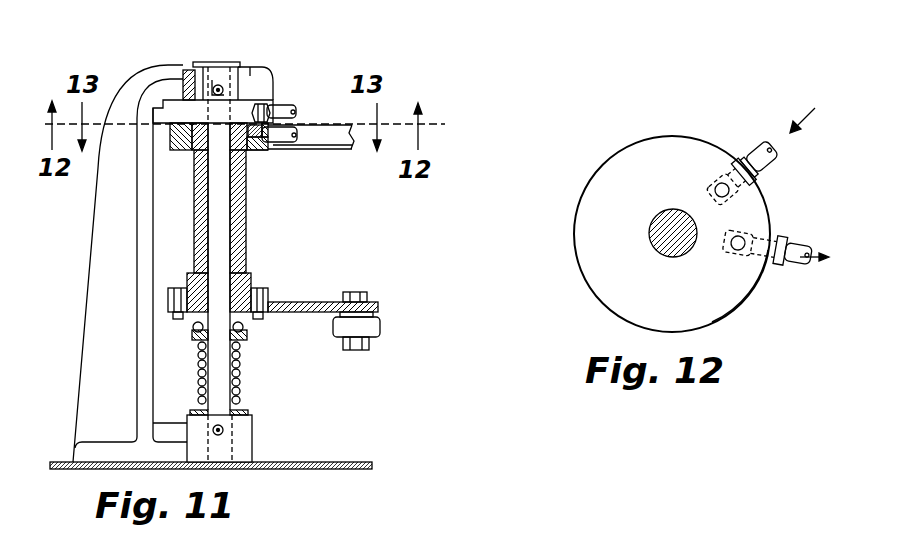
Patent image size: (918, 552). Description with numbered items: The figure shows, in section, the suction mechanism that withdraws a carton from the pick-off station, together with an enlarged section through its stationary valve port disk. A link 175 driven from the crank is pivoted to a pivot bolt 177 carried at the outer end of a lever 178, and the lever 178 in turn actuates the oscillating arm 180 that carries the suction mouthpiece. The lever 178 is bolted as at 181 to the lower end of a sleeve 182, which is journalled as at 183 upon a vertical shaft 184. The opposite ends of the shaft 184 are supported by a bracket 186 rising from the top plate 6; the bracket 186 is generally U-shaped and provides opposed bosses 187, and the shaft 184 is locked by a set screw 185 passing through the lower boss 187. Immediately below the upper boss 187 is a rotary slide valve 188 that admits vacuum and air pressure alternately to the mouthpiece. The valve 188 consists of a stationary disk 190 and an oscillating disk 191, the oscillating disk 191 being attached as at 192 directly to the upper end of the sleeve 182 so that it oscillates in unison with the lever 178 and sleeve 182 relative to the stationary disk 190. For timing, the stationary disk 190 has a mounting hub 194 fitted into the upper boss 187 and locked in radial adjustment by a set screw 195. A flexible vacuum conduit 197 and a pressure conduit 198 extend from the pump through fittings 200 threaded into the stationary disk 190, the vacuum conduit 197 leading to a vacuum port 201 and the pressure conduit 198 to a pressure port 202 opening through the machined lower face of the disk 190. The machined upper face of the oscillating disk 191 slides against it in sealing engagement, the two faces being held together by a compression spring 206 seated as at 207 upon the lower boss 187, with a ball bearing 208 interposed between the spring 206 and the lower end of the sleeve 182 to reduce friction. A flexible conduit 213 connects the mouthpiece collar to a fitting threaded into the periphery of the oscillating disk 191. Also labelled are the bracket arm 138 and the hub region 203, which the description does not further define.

In FIG. 11, the top plate 6 is at (344, 469).
In FIG. 11, the frame arm 138 is at (124, 65).
In FIG. 11, the link 175 is at (370, 326).
In FIG. 11, the pivot bolt 177 is at (364, 292).
In FIG. 11, the lever 178 is at (300, 302).
In FIG. 11, the oscillating arm 180 is at (347, 141).
In FIG. 11, the bolt 181 is at (260, 320).
In FIG. 11, the sleeve 182 is at (248, 212).
In FIG. 11, the journal 183 is at (250, 160).
In FIG. 11, the vertical shaft 184 is at (220, 232).
In FIG. 12, the vertical shaft 184 is at (654, 242).
In FIG. 11, the set screw 185 is at (228, 437).
In FIG. 11, the bracket 186 is at (97, 247).
In FIG. 11, the boss 187 is at (252, 426).
In FIG. 11, the rotary slide valve 188 is at (252, 103).
In FIG. 11, the stationary disk 190 is at (236, 108).
In FIG. 12, the stationary disk 190 is at (587, 282).
In FIG. 11, the oscillating disk 191 is at (178, 143).
In FIG. 11, the attachment 192 is at (194, 152).
In FIG. 11, the mounting hub 194 is at (199, 70).
In FIG. 11, the set screw 195 is at (220, 62).
In FIG. 12, the vacuum conduit 197 is at (798, 270).
In FIG. 11, the pressure conduit 198 is at (285, 104).
In FIG. 12, the pressure conduit 198 is at (767, 140).
In FIG. 12, the fitting 200 is at (748, 150).
In FIG. 12, the vacuum port 201 is at (733, 256).
In FIG. 12, the pressure port 202 is at (721, 186).
In FIG. 11, the hub 203 is at (185, 92).
In FIG. 12, the hub 203 is at (607, 224).
In FIG. 11, the compression spring 206 is at (246, 368).
In FIG. 11, the spring seat 207 is at (198, 412).
In FIG. 11, the ball bearing 208 is at (192, 330).
In FIG. 11, the flexible conduit 213 is at (300, 131).